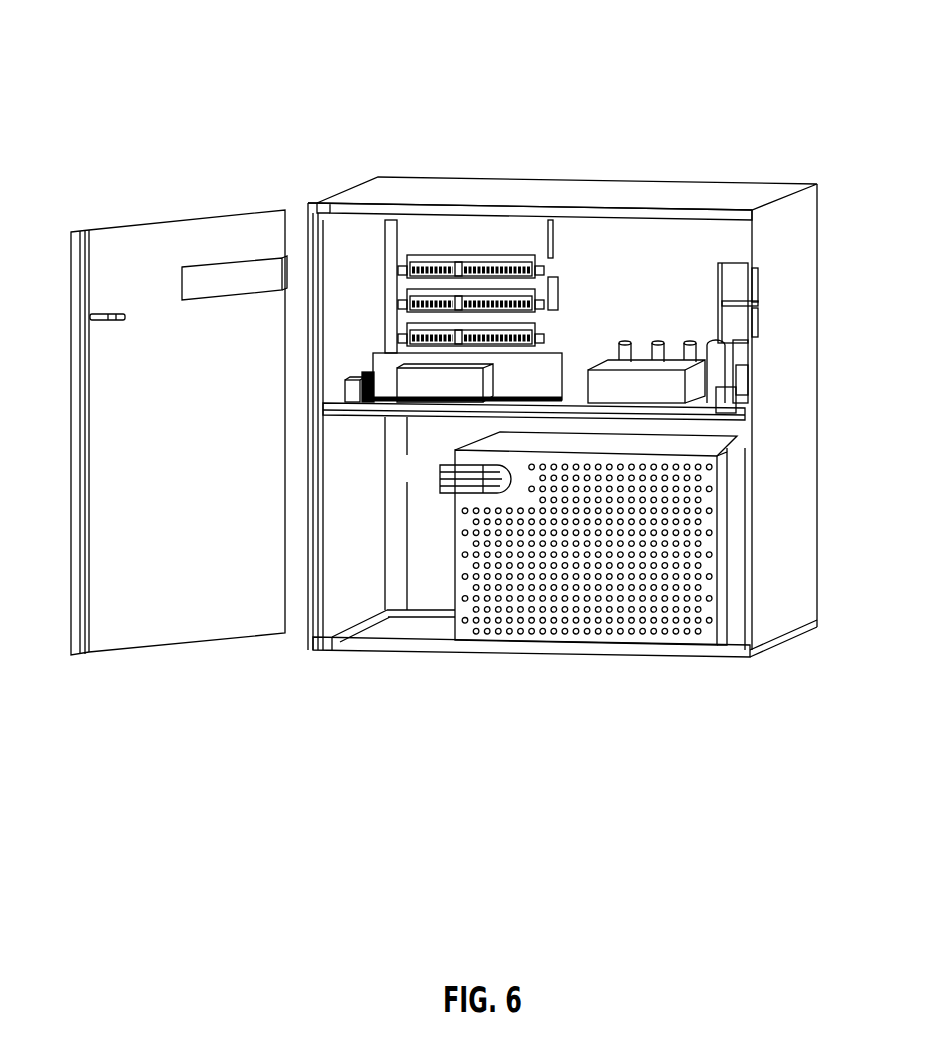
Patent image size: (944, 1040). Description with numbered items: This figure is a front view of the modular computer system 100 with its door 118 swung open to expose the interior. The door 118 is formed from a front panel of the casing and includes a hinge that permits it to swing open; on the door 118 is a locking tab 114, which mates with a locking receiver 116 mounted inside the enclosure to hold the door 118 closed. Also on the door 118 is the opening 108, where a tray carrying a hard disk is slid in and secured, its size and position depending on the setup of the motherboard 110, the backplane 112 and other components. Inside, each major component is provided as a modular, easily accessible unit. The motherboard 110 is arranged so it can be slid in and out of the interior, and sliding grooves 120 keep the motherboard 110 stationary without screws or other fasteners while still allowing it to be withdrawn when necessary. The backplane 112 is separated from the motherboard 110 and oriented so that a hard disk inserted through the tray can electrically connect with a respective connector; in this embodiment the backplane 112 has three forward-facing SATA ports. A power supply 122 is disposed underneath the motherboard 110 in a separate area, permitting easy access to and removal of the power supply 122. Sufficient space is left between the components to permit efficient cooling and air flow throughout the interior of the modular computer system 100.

The modular computer system 100 is at (623, 95).
The opening 108 is at (242, 272).
The motherboard 110 is at (457, 415).
The backplane 112 is at (548, 307).
The locking tab 114 is at (103, 318).
The locking receiver 116 is at (747, 302).
The door 118 is at (145, 237).
The sliding grooves 120 is at (330, 425).
The power supply 122 is at (608, 610).